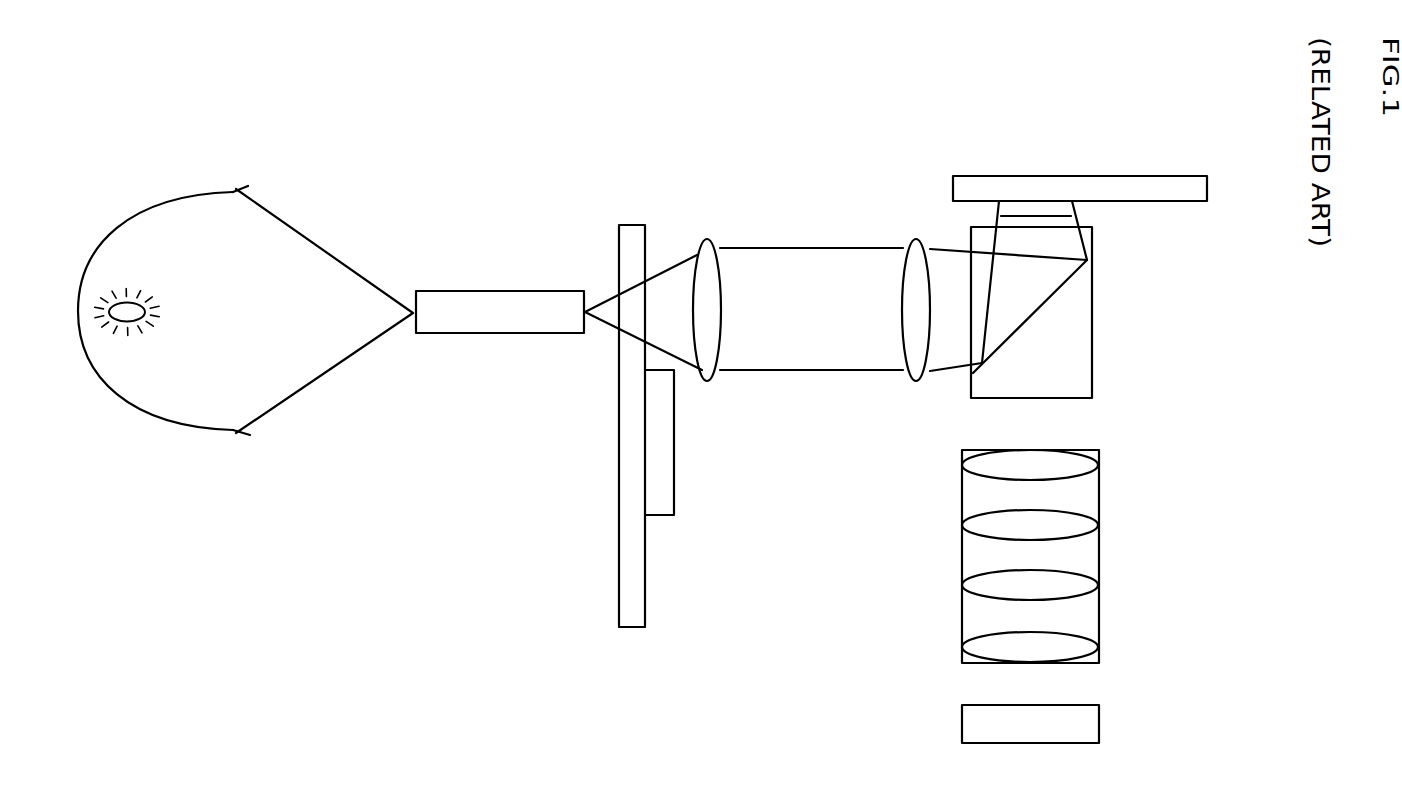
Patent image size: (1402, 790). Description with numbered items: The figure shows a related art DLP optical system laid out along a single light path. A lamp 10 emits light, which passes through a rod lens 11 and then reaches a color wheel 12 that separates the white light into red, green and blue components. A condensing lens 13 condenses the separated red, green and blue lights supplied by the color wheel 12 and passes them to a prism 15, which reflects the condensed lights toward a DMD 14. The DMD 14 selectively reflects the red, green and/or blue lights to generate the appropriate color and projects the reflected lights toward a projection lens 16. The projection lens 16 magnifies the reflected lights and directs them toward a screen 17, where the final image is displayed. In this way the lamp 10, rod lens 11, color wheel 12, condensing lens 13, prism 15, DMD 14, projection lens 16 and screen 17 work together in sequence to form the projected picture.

The lamp 10 is at (178, 418).
The rod lens 11 is at (437, 290).
The color wheel 12 is at (619, 473).
The condensing lens 13 is at (917, 383).
The DMD 14 is at (1040, 205).
The prism 15 is at (1092, 337).
The projection lens 16 is at (1100, 583).
The screen 17 is at (1100, 723).